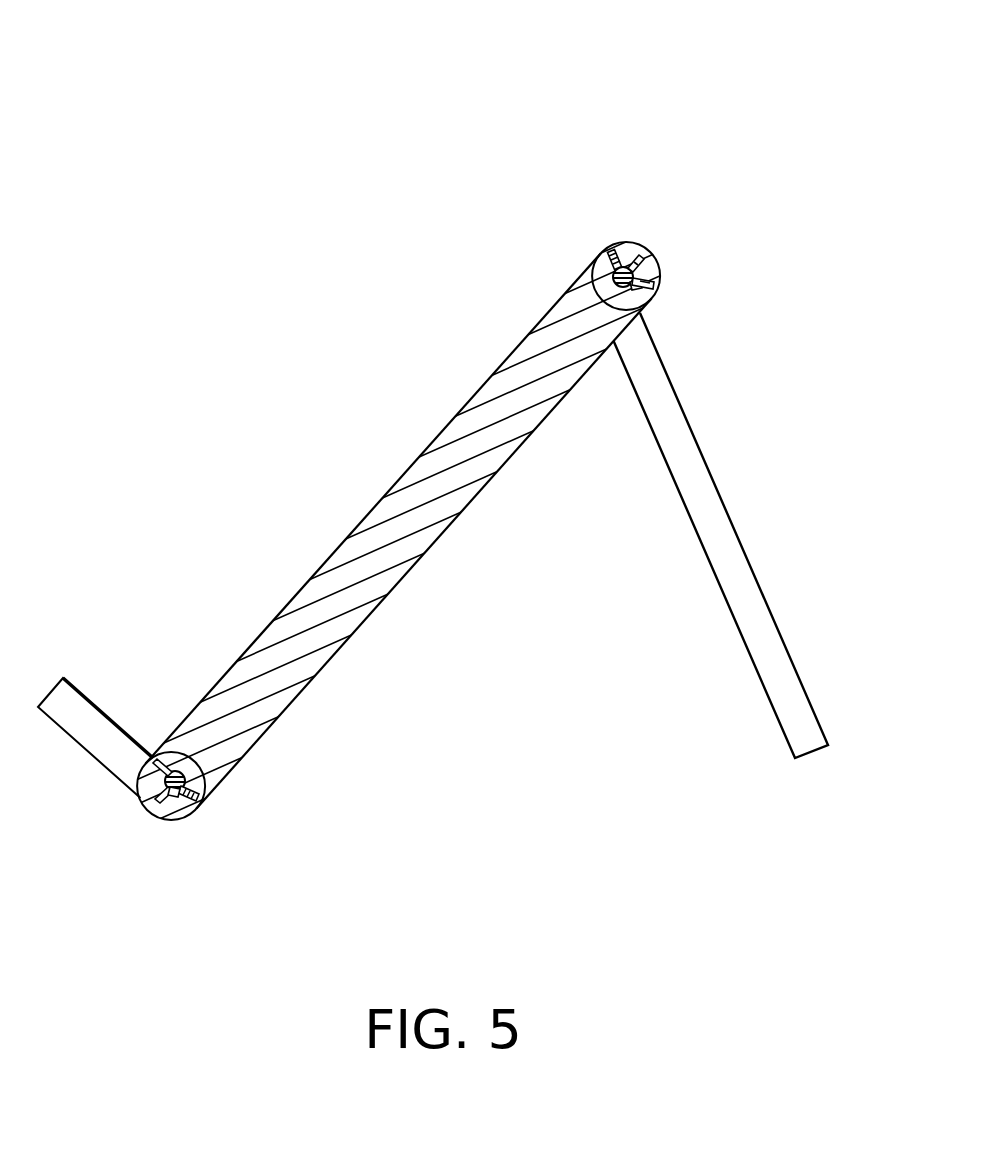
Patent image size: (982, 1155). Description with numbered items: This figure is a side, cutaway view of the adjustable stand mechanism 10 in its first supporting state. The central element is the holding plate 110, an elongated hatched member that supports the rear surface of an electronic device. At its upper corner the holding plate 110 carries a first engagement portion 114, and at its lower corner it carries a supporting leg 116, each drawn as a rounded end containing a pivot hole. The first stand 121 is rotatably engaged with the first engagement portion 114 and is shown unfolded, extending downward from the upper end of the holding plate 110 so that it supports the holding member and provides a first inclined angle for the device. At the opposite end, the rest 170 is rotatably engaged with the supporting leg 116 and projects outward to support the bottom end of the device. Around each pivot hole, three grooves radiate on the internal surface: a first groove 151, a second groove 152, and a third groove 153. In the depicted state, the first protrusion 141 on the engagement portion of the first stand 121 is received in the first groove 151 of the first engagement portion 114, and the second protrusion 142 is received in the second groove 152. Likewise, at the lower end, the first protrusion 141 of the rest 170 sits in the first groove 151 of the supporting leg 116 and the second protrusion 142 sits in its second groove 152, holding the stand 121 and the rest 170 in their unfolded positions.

The adjustable stand mechanism 10 is at (525, 80).
The holding plate 110 is at (405, 523).
The first engagement portion 114 is at (627, 248).
The supporting leg 116 is at (180, 805).
The first stand 121 is at (698, 482).
The first protrusion 141 is at (613, 248).
The second protrusion 142 is at (643, 255).
The first groove 151 is at (620, 268).
The second groove 152 is at (637, 271).
The third groove 153 is at (655, 284).
The rest 170 is at (72, 705).